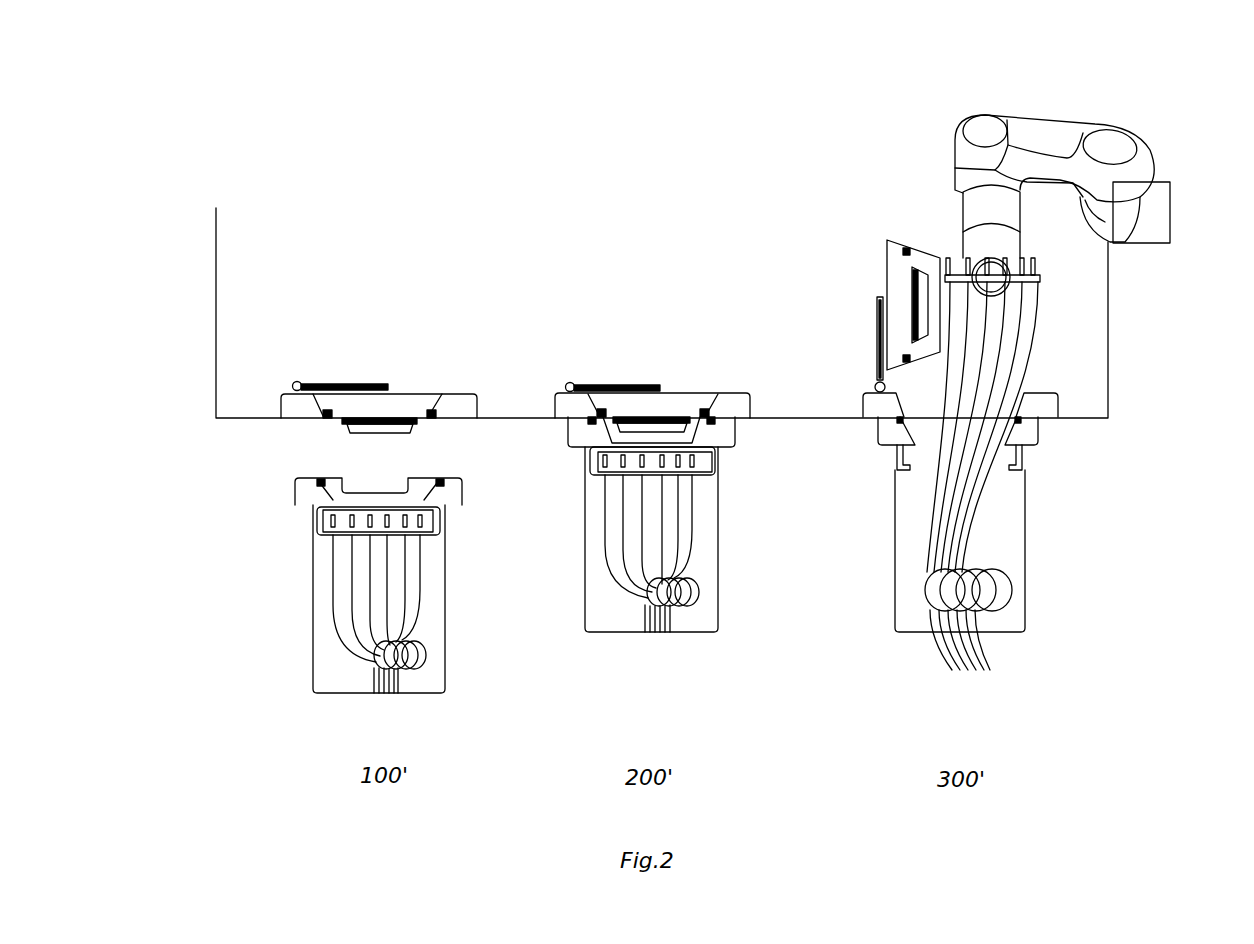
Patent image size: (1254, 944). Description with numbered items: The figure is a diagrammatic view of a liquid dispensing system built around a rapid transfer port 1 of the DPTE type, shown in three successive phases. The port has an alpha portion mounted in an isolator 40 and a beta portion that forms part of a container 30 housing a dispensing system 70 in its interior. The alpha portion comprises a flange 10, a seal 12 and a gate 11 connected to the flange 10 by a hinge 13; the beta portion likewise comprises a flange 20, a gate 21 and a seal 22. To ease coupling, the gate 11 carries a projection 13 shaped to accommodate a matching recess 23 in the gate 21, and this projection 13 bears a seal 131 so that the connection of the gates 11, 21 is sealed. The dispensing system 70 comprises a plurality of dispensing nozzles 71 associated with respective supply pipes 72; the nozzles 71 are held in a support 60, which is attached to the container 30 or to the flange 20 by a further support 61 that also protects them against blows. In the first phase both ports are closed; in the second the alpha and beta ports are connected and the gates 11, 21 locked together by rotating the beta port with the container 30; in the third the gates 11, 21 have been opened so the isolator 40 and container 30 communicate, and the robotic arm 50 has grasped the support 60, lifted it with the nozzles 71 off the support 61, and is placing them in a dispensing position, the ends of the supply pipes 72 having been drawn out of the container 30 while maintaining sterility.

The rapid transfer port 1 is at (273, 403).
The flange 10 is at (460, 400).
The gate 11 is at (417, 403).
The seal 12 is at (332, 420).
The hinge / projection 13 is at (358, 384).
The seal 131 is at (417, 430).
The flange 20 is at (720, 430).
The gate 21 is at (337, 495).
The seal 22 is at (320, 483).
The recess 23 is at (397, 483).
The container 30 is at (312, 627).
The isolator 40 is at (216, 290).
The robotic arm 50 is at (1042, 140).
The support 60 is at (1047, 280).
The support 61 is at (1030, 457).
The dispensing system 70 is at (338, 660).
The dispensing nozzles 71 is at (1047, 258).
The supply pipes 72 is at (1040, 338).